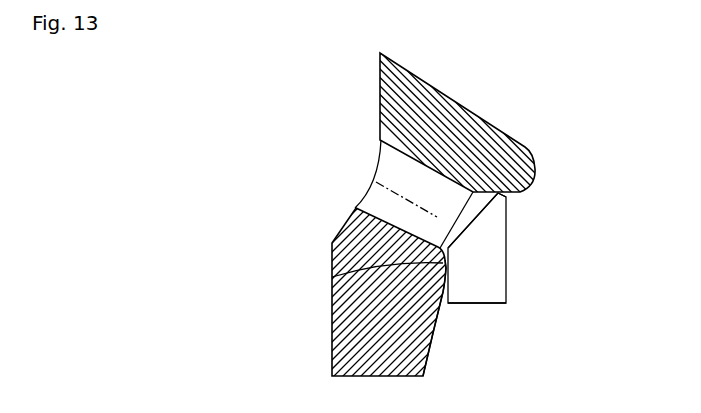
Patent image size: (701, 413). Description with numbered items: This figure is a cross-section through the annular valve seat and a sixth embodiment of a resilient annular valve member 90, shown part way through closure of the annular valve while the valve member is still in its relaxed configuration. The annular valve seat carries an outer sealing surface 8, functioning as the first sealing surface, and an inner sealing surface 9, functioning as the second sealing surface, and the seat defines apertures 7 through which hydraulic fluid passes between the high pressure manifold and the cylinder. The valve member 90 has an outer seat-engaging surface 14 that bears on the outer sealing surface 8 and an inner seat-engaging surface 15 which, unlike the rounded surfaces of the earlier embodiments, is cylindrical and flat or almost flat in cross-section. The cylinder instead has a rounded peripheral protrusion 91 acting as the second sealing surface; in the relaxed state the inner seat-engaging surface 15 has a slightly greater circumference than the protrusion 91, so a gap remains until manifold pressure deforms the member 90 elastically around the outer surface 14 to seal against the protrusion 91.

The apertures 7 is at (392, 197).
The outer sealing surface 8 is at (530, 150).
The inner sealing surface 9 is at (332, 277).
The outer seat-engaging surface 14 is at (505, 199).
The inner seat-engaging surface 15 is at (448, 273).
The resilient annular valve member 90 is at (485, 255).
The rounded peripheral protrusion 91 is at (445, 300).